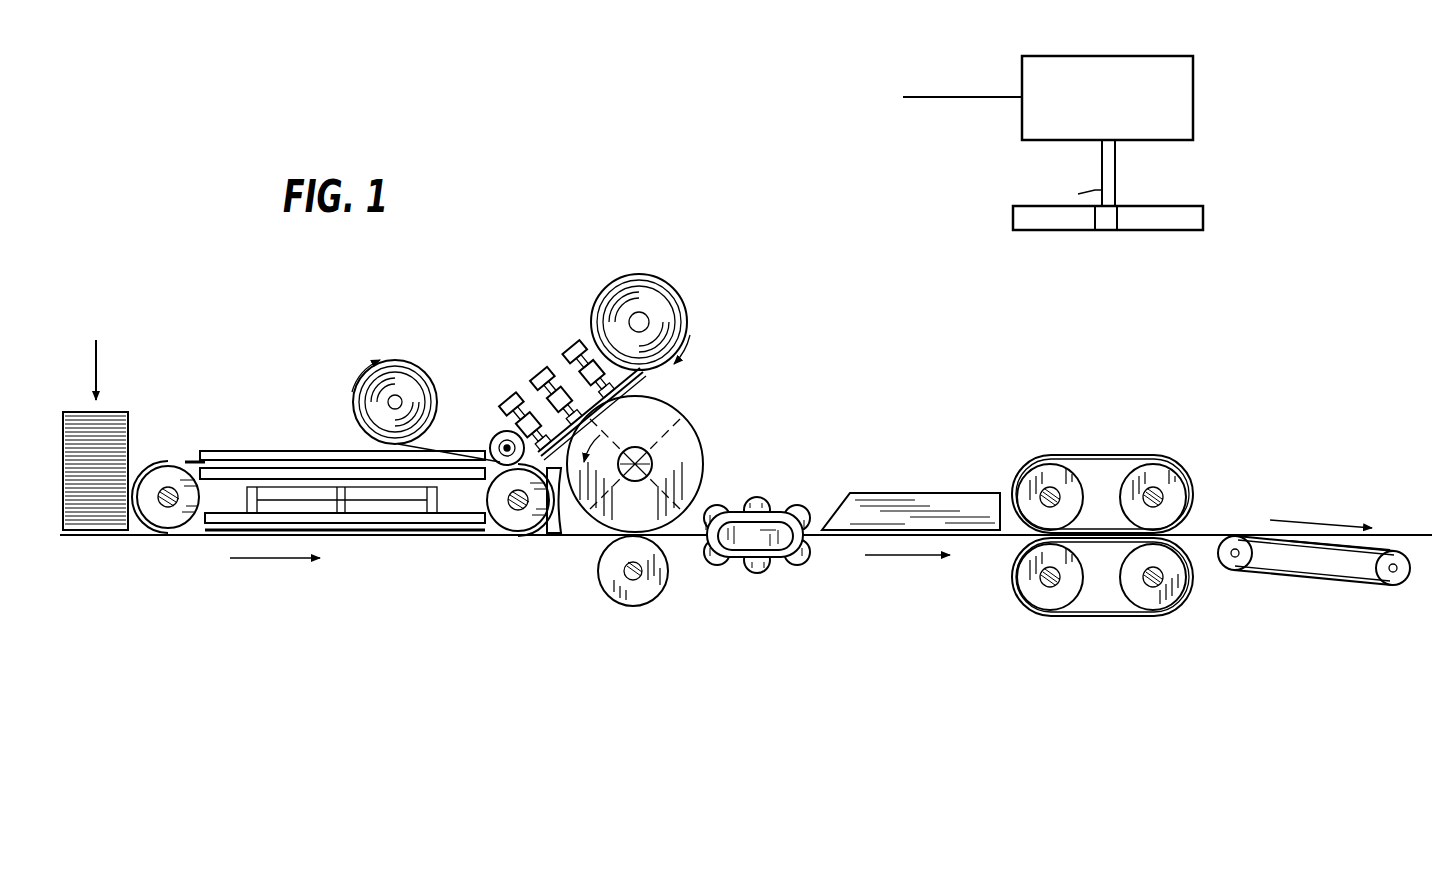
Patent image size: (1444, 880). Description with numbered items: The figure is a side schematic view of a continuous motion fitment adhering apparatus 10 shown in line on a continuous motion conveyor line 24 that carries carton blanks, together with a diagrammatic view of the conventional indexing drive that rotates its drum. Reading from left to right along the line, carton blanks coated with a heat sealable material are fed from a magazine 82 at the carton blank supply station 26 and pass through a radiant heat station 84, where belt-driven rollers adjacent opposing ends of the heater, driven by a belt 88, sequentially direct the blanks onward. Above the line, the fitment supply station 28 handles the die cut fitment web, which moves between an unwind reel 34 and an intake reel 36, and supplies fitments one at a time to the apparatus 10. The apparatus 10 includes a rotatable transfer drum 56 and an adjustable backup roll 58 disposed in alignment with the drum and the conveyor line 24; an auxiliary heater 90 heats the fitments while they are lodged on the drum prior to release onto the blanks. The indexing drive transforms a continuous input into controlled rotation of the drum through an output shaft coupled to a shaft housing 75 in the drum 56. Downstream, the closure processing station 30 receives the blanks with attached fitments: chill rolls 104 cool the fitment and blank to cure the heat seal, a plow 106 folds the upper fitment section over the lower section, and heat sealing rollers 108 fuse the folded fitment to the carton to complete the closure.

In FIG. 1, the continuous motion fitment adhering apparatus 10 is at (672, 452).
In FIG. 1, the continuous motion conveyor line 24 is at (1236, 482).
In FIG. 1, the carton blank supply station 26 is at (575, 568).
In FIG. 1, the fitment supply station 28 is at (533, 336).
In FIG. 1, the closure processing station 30 is at (995, 573).
In FIG. 1, the unwind reel 34 is at (656, 294).
In FIG. 1, the intake reel 36 is at (404, 361).
In FIG. 1, the rotatable transfer drum 56 is at (706, 462).
In FIG. 1A, the rotatable transfer drum 56 is at (1208, 218).
In FIG. 1, the adjustable backup roll 58 is at (631, 606).
In FIG. 1A, the shaft housing 75 is at (1042, 150).
In FIG. 1, the magazine 82 is at (150, 400).
In FIG. 1, the radiant heat station 84 is at (360, 535).
In FIG. 1, the belt 88 is at (188, 465).
In FIG. 1, the auxiliary heater 90 is at (552, 535).
In FIG. 1, the chill rolls 104 is at (757, 578).
In FIG. 1, the plow 106 is at (946, 492).
In FIG. 1, the heat sealing rollers 108 is at (1095, 620).